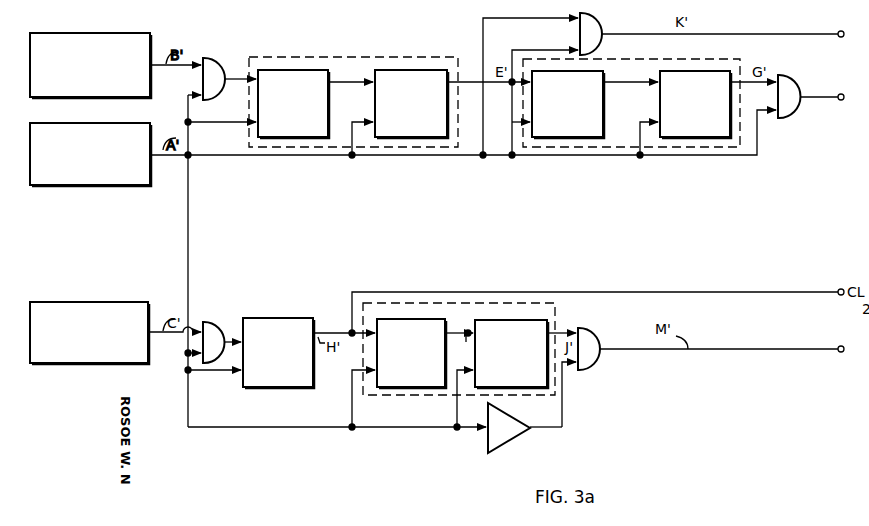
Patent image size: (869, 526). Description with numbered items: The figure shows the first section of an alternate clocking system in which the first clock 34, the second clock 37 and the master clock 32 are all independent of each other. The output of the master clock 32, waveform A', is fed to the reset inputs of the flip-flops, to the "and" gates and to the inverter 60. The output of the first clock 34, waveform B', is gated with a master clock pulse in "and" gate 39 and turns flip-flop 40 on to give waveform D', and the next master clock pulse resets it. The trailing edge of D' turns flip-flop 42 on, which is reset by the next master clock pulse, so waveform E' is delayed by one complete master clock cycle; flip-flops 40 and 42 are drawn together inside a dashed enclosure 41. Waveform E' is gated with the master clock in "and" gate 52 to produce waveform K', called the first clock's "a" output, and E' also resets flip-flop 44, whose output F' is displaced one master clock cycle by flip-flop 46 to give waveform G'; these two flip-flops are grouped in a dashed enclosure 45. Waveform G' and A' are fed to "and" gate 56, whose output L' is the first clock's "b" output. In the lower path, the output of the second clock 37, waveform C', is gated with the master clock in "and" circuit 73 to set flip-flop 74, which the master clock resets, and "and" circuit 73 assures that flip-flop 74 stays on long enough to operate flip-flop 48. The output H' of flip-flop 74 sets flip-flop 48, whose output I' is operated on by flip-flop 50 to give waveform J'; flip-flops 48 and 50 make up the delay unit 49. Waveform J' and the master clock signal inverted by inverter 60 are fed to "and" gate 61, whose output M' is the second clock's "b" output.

The clock 1 34 is at (100, 33).
The master clock 32 is at (97, 123).
The clock 2 37 is at (97, 302).
The "and" gate 39 is at (208, 62).
The flip-flop 40 is at (278, 70).
The flip-flop pair (dashed group) 41 is at (353, 96).
The flip-flop 42 is at (398, 70).
The flip-flop 44 is at (568, 137).
The flip-flop pair (dashed group) 45 is at (626, 112).
The flip-flop 46 is at (700, 137).
The "and" gate 52 is at (596, 26).
The "and" gate 56 is at (790, 92).
The "and" circuit 73 is at (208, 324).
The flip-flop 74 is at (273, 320).
The flip-flop 48 is at (398, 387).
The delay unit 49 is at (453, 352).
The flip-flop 50 is at (512, 387).
The inverter 60 is at (510, 446).
The "and" gate 61 is at (593, 345).